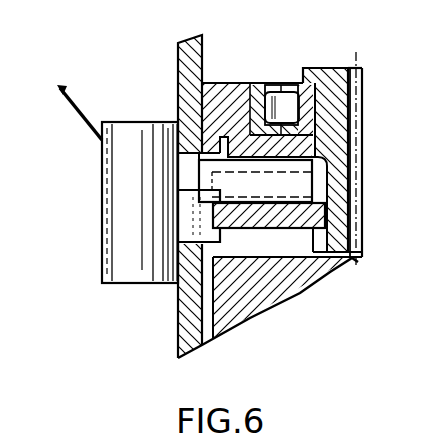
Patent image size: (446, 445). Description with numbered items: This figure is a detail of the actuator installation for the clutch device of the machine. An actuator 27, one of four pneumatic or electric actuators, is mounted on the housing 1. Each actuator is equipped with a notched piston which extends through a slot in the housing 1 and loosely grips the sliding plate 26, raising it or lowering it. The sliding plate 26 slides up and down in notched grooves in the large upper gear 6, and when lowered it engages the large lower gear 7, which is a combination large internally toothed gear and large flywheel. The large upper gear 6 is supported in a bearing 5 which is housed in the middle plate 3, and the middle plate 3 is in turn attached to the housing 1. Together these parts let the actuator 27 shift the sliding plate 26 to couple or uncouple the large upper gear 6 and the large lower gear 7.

The housing 1 is at (178, 62).
The middle plate 3 is at (223, 83).
The bearing 5 is at (280, 85).
The large upper gear 6 is at (366, 90).
The large lower gear 7 is at (236, 317).
The sliding plate 26 is at (288, 228).
The actuator 27 is at (102, 189).